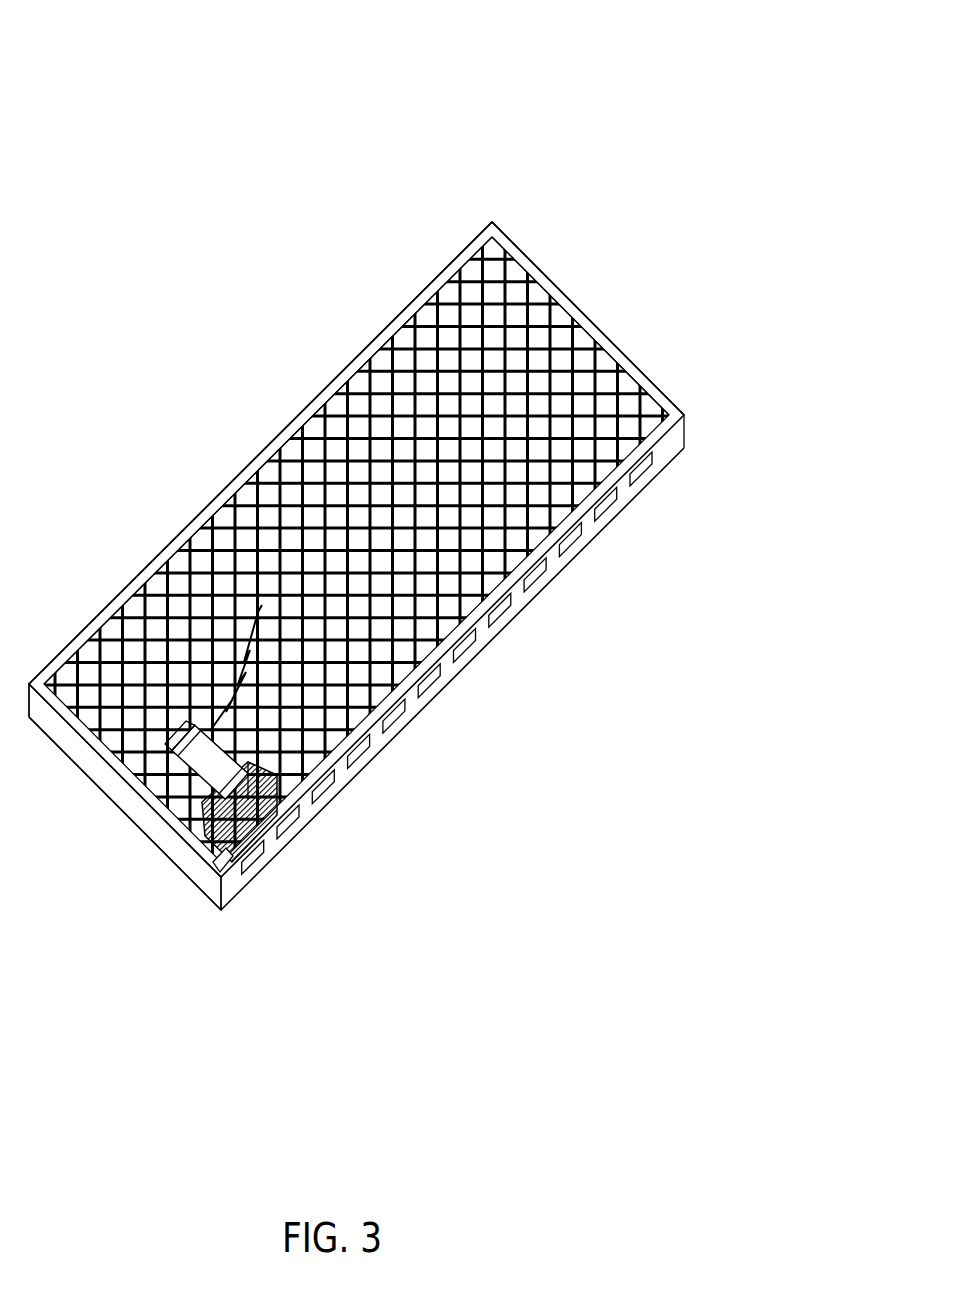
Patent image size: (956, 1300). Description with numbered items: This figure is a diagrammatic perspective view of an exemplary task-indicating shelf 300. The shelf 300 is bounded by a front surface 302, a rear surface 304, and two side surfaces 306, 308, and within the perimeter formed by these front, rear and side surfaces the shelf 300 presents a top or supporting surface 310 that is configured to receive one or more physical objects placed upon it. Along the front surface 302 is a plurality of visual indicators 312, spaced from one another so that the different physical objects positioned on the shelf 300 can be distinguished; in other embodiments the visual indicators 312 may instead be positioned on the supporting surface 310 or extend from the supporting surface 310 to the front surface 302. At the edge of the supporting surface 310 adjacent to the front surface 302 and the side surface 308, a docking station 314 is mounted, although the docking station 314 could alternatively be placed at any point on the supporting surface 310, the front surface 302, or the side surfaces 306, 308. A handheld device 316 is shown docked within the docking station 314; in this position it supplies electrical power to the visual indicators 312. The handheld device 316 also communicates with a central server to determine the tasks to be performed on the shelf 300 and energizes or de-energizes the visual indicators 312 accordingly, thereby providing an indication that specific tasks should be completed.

The task-indicating shelf 300 is at (480, 54).
The front surface 302 is at (665, 447).
The rear surface 304 is at (227, 488).
The side surface 306 is at (563, 296).
The side surface 308 is at (77, 747).
The supporting surface 310 is at (92, 657).
The visual indicators 312 is at (427, 695).
The docking station 314 is at (217, 842).
The handheld device 316 is at (277, 822).